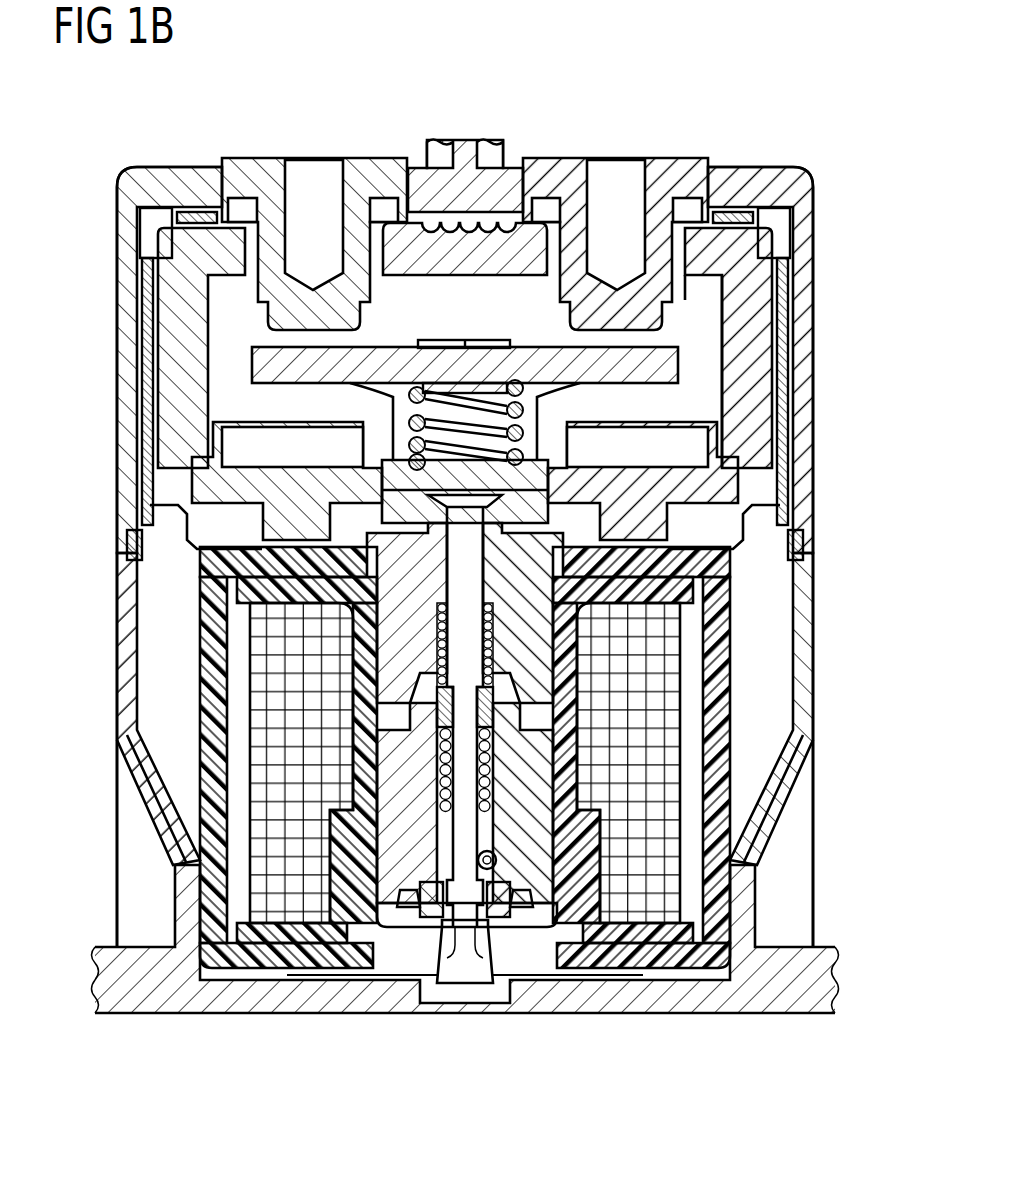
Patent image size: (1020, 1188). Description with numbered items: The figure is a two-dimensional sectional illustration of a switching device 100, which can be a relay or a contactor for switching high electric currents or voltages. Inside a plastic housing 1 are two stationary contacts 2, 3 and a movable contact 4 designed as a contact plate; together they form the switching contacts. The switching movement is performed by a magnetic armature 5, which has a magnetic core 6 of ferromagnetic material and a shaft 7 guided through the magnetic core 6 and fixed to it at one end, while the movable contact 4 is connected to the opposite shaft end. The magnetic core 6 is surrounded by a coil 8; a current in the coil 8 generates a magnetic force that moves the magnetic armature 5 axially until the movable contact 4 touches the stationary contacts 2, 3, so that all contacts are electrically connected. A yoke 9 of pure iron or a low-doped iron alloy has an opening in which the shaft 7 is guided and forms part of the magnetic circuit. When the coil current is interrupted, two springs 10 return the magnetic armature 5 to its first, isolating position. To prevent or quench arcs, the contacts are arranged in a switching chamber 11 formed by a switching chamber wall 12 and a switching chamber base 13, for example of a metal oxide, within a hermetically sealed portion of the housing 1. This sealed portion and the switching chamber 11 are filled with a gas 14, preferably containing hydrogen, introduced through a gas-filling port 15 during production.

The housing 1 is at (140, 178).
The stationary contact 2 is at (249, 168).
The stationary contact 3 is at (672, 168).
The movable contact 4 is at (665, 375).
The magnetic armature 5 is at (355, 740).
The magnetic core 6 is at (406, 868).
The shaft 7 is at (466, 822).
The coil 8 is at (277, 918).
The yoke 9 is at (405, 620).
The spring 10 is at (497, 757).
The switching chamber 11 is at (138, 438).
The switching chamber wall 12 is at (762, 282).
The switching chamber base 13 is at (735, 490).
The gas 14 is at (708, 325).
The gas-filling port 15 is at (468, 972).
The switching device 100 is at (752, 104).